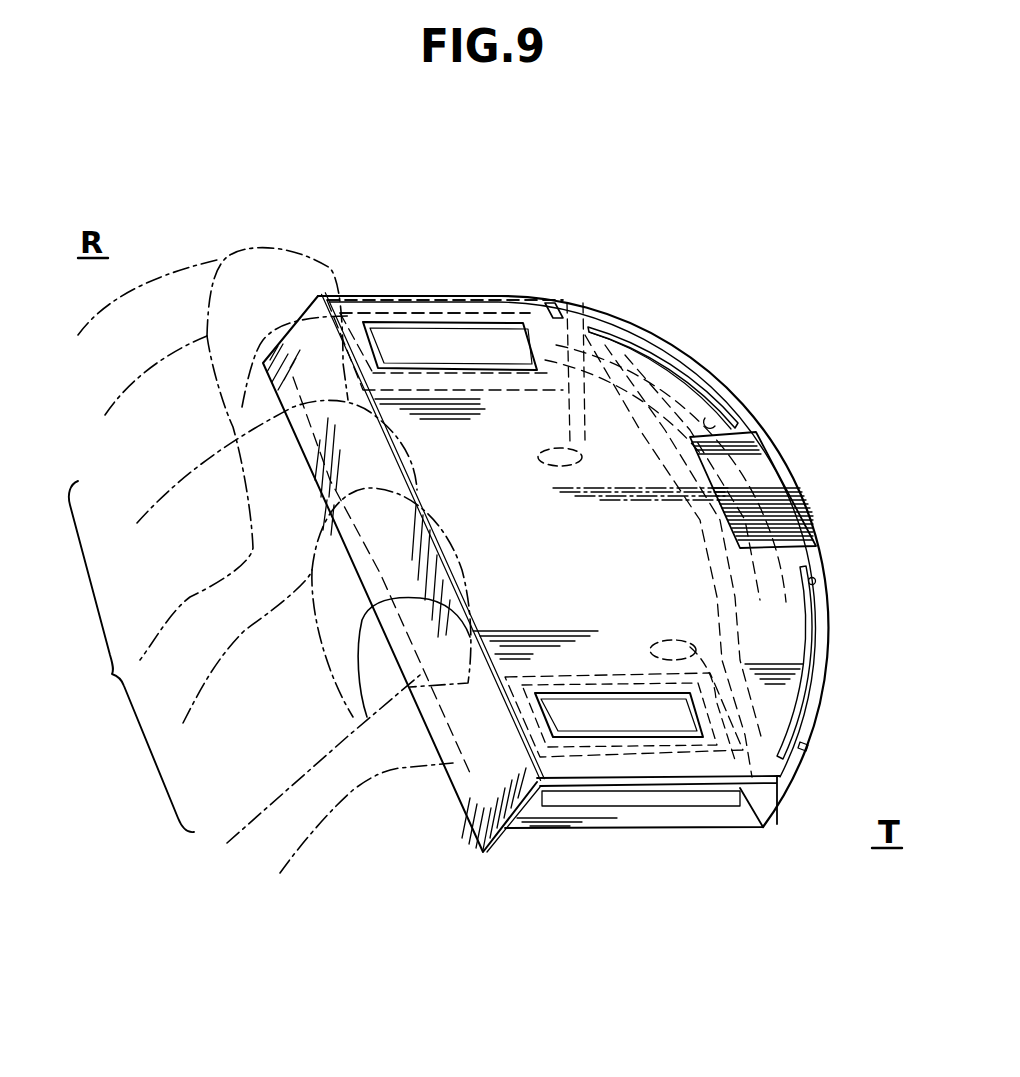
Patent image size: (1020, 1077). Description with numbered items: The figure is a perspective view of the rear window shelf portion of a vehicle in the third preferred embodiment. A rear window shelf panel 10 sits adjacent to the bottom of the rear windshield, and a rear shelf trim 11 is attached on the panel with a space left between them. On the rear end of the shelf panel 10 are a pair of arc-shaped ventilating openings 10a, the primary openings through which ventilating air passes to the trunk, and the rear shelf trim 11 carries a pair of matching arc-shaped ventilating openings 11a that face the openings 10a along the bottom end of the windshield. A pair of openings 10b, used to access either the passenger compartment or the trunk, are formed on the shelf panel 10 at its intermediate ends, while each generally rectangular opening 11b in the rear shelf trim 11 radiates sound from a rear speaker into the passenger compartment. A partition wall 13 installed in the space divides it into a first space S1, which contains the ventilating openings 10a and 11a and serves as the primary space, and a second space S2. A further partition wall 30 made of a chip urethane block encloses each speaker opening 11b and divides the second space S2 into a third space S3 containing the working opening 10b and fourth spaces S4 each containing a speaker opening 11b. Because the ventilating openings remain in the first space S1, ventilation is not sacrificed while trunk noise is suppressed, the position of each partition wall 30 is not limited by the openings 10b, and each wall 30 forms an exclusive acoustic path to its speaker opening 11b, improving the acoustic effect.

The rear window shelf panel 10 is at (748, 828).
The ventilating openings 10a is at (712, 425).
The openings 10b is at (586, 451).
The rear shelf trim 11 is at (592, 322).
The ventilating openings 11a is at (660, 366).
The rectangular opening 11b is at (474, 338).
The partition wall 13 is at (568, 298).
The partition wall 30 is at (377, 306).
The first space S1 is at (757, 483).
The second space S2 is at (209, 546).
The third space S3 is at (483, 563).
The fourth spaces S4 is at (387, 343).